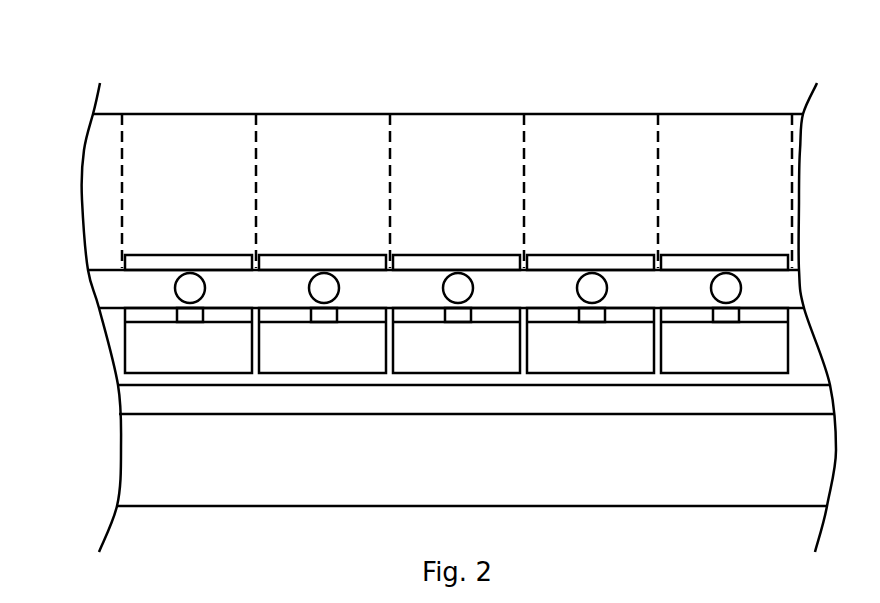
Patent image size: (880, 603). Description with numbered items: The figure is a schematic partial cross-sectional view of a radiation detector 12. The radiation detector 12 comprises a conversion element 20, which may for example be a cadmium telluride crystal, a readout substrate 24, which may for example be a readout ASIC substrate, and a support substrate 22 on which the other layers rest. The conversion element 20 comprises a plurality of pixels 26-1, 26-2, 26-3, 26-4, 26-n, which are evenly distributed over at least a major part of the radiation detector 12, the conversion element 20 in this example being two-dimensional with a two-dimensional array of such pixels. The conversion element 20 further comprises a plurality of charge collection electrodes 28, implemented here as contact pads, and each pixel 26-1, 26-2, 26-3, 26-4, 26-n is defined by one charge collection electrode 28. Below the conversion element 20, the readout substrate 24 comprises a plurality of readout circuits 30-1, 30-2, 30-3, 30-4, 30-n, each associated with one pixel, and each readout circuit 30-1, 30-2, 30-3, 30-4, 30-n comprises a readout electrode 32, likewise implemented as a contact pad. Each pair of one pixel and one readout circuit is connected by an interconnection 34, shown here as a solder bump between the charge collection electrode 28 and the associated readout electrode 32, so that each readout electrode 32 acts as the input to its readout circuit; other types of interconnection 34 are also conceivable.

The radiation detector 12 is at (173, 65).
The conversion element 20 is at (96, 190).
The support substrate 22 is at (444, 475).
The readout substrate 24 is at (117, 337).
The pixel 26-1 is at (164, 160).
The pixel 26-2 is at (298, 160).
The pixel 26-3 is at (432, 160).
The pixel 26-4 is at (566, 160).
The pixel 26-n is at (700, 160).
The charge collection electrode 28 is at (221, 260).
The readout circuit 30-1 is at (164, 359).
The readout circuit 30-2 is at (298, 359).
The readout circuit 30-3 is at (432, 359).
The readout circuit 30-4 is at (566, 359).
The readout circuit 30-n is at (700, 359).
The readout electrode 32 is at (193, 315).
The interconnection 34 is at (189, 292).